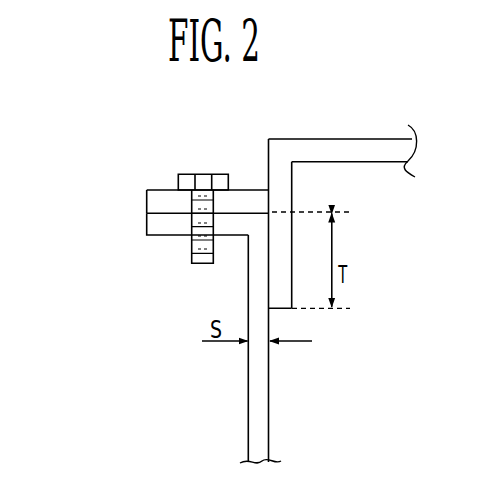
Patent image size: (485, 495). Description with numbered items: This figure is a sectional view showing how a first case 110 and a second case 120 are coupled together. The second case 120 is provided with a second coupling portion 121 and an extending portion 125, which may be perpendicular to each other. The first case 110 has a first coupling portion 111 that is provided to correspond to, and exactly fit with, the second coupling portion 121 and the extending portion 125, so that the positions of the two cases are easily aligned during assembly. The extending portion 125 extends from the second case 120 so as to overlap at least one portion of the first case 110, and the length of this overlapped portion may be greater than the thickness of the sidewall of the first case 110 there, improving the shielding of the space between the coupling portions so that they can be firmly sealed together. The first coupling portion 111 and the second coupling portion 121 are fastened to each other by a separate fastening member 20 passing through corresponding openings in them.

The fastening member 20 is at (202, 174).
The first case 110 is at (242, 375).
The first coupling portion 111 is at (162, 227).
The second case 120 is at (361, 121).
The second coupling portion 121 is at (162, 198).
The extending portion 125 is at (283, 245).